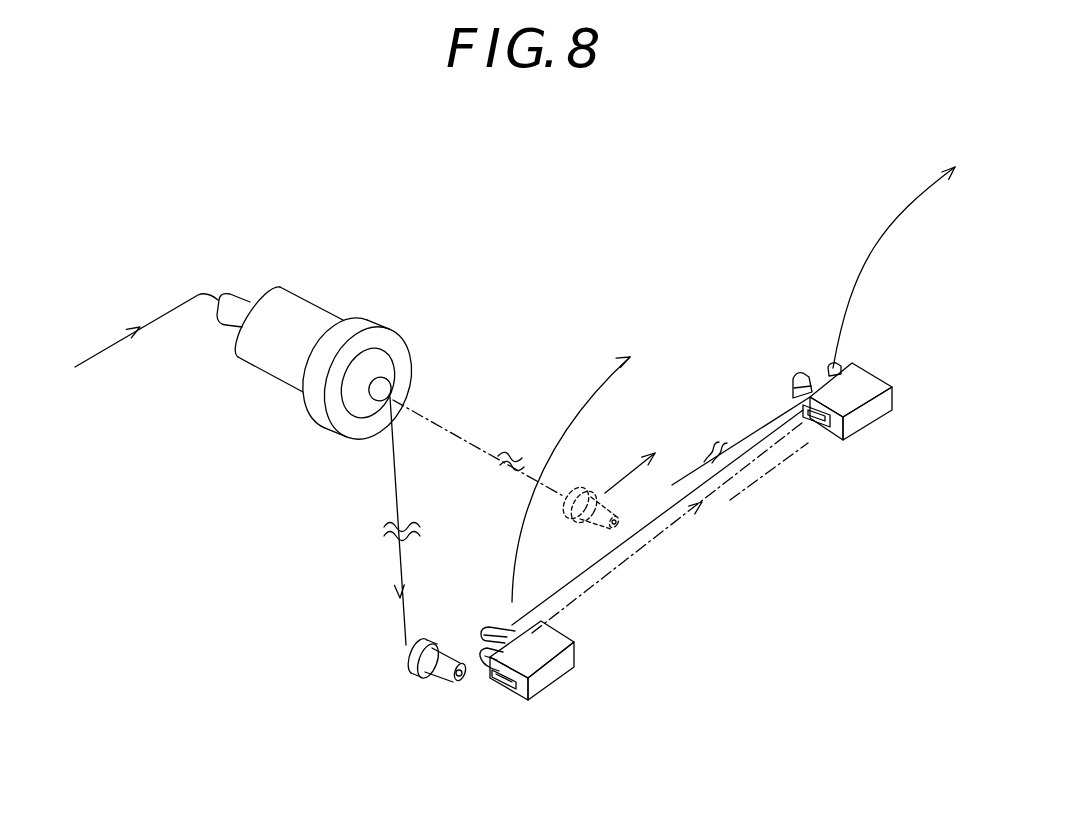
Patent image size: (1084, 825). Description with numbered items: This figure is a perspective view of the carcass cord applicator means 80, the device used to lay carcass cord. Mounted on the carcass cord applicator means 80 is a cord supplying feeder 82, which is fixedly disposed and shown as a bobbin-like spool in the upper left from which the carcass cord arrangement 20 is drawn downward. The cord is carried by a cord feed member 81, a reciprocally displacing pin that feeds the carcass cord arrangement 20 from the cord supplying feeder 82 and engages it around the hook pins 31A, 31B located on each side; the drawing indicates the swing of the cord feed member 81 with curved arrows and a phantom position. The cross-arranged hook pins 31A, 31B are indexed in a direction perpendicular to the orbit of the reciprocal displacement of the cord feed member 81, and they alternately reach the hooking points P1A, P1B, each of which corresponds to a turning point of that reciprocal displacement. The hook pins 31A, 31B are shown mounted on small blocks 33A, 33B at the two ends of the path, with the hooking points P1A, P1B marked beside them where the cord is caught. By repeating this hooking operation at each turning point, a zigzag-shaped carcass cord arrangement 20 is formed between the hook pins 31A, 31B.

The cord supplying feeder 82 is at (290, 308).
The carcass cord applicator means 80 is at (527, 288).
The carcass cord arrangement 20 is at (395, 491).
The cord feed member 81 is at (433, 676).
The hook pin 31A is at (487, 628).
The hook pin 31B is at (792, 380).
The connector block 33A is at (540, 653).
The connector block 33B is at (858, 393).
The hooking point P1A is at (490, 690).
The hooking point P1B is at (807, 440).